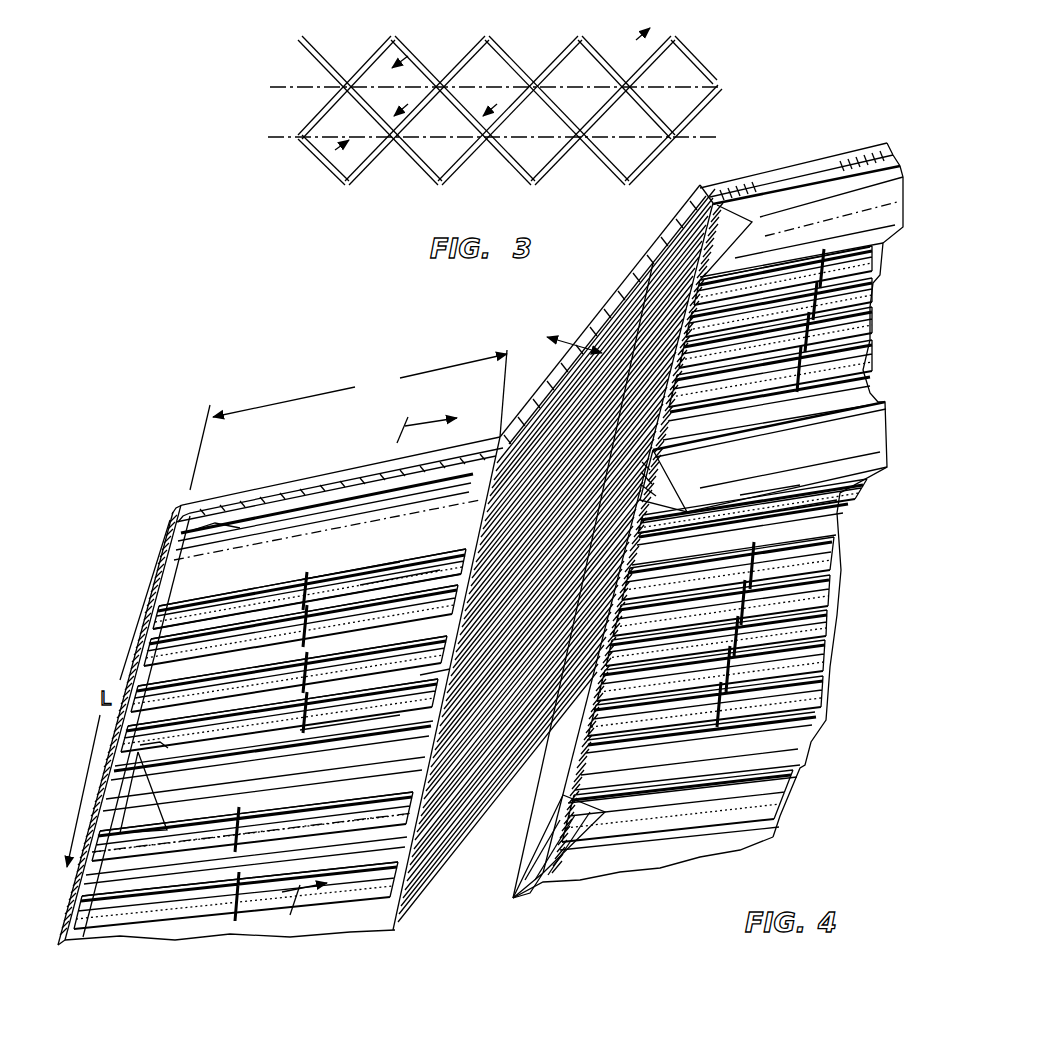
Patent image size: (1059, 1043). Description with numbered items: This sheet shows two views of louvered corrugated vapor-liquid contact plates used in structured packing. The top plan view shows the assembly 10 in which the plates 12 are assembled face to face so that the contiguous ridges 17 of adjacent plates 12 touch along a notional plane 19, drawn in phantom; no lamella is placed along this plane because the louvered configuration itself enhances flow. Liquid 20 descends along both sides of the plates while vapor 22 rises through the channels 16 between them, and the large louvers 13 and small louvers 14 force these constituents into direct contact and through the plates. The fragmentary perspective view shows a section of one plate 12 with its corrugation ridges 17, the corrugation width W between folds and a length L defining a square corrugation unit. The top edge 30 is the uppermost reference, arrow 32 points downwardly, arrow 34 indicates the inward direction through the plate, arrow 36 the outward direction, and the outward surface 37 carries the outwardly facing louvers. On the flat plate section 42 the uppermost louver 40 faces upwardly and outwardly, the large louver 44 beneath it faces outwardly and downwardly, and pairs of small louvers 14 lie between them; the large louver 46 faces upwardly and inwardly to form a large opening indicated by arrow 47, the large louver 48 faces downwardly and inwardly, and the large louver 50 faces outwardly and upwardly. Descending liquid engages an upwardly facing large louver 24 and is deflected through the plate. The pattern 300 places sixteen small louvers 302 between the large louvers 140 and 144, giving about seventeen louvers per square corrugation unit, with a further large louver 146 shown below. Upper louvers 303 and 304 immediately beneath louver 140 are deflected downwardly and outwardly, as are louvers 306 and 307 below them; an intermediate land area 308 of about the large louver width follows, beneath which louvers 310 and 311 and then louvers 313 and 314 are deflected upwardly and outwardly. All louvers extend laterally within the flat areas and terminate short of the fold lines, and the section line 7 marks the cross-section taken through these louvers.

In FIG. 3, the assembly 10 is at (732, 88).
In FIG. 3, the plate 12 is at (486, 40).
In FIG. 4, the plate 12 is at (620, 290).
In FIG. 4, the large louvers 13 is at (157, 793).
In FIG. 3, the small louvers 14 is at (663, 107).
In FIG. 4, the small louvers 14 is at (165, 690).
In FIG. 3, the channels 16 is at (415, 67).
In FIG. 4, the channels 16 is at (387, 447).
In FIG. 3, the ridges 17 is at (584, 76).
In FIG. 4, the ridges 17 is at (500, 437).
In FIG. 3, the notional plane 19 is at (375, 75).
In FIG. 3, the liquid 20 is at (417, 92).
In FIG. 4, the liquid 20 is at (333, 800).
In FIG. 3, the vapor 22 is at (663, 63).
In FIG. 4, the vapor 22 is at (859, 780).
In FIG. 4, the large louver 24 is at (260, 533).
In FIG. 4, the top edge 30 is at (660, 238).
In FIG. 4, the arrow 32 is at (245, 385).
In FIG. 4, the arrow 34 is at (560, 342).
In FIG. 4, the arrow 36 is at (882, 506).
In FIG. 4, the outward surface 37 is at (890, 307).
In FIG. 4, the uppermost louver 40 is at (762, 265).
In FIG. 4, the flat plate section 42 is at (757, 183).
In FIG. 4, the large louver 44 is at (717, 482).
In FIG. 4, the large louver 46 is at (680, 563).
In FIG. 4, the arrow 47 is at (770, 506).
In FIG. 4, the large louver 48 is at (777, 730).
In FIG. 4, the large louver 50 is at (603, 840).
In FIG. 4, the large louver 140 is at (448, 542).
In FIG. 4, the large louver 144 is at (386, 772).
In FIG. 4, the lower flat face of left panel 146 is at (161, 880).
In FIG. 4, the pattern 300 is at (146, 552).
In FIG. 4, the small louvers 302 is at (227, 610).
In FIG. 4, the upper louver 303 is at (305, 587).
In FIG. 4, the upper louver 304 is at (357, 578).
In FIG. 4, the louver 306 is at (273, 620).
In FIG. 4, the louver 307 is at (393, 580).
In FIG. 4, the intermediate land area 308 is at (155, 628).
In FIG. 4, the louver 310 is at (152, 678).
In FIG. 4, the louver 311 is at (440, 673).
In FIG. 4, the louver 313 is at (150, 743).
In FIG. 4, the louver 314 is at (340, 717).
In FIG. 4, the section line 7 is at (358, 660).